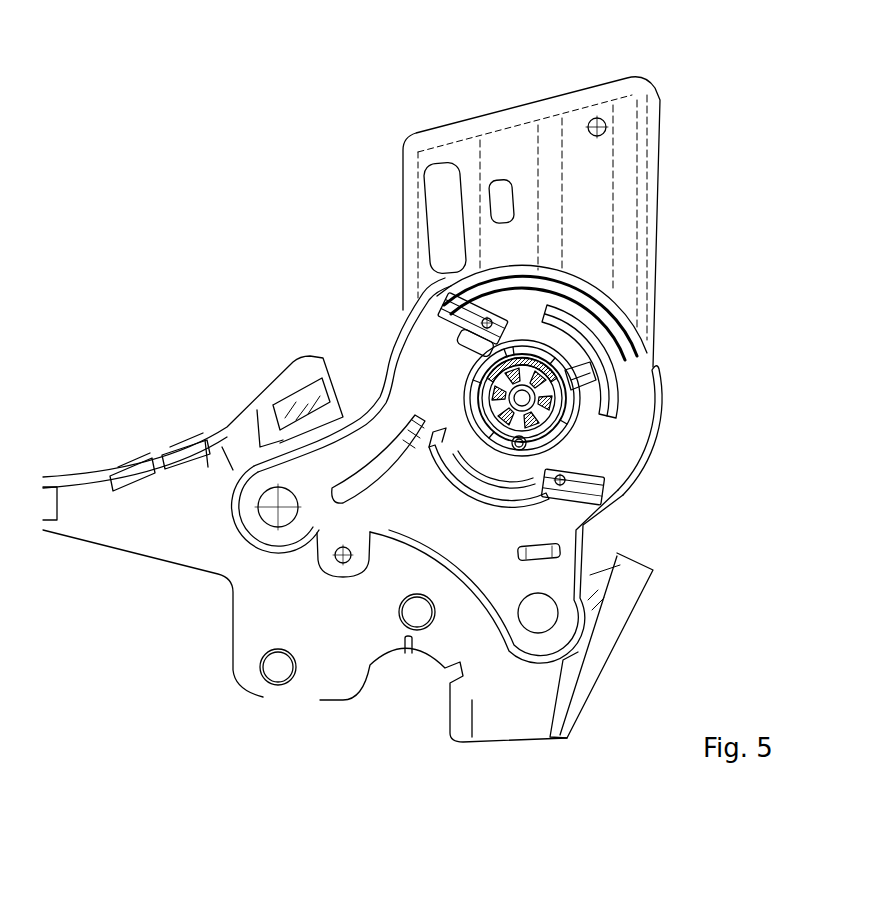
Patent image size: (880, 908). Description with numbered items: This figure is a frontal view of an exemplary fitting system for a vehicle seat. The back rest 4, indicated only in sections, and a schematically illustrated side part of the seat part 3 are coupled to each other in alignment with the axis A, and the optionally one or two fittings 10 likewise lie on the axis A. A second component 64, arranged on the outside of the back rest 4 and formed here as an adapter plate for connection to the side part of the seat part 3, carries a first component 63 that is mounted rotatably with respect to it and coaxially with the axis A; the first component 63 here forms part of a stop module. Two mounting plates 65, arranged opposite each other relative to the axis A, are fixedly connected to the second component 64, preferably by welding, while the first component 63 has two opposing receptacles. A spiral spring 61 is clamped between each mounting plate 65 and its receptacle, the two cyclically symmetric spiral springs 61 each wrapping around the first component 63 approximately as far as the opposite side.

The seat part 3 is at (170, 517).
The back rest 4 is at (523, 140).
The fitting 10 is at (607, 313).
The spiral spring 61 is at (443, 417).
The first component 63 is at (573, 377).
The second component 64 is at (427, 360).
The mounting plate 65 is at (467, 307).
The axis A is at (533, 403).